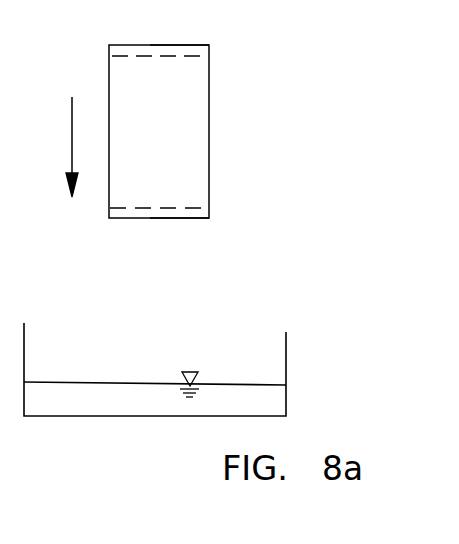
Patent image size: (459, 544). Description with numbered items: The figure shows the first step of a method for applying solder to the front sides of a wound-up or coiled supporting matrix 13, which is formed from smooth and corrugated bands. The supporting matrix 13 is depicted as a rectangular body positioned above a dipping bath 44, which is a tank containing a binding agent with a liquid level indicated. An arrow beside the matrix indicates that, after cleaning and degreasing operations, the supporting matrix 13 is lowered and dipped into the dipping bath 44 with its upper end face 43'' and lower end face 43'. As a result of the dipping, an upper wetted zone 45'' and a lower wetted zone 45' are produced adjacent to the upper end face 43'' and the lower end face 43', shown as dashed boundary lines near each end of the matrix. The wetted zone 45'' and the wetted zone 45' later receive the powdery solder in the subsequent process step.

The supporting matrix 13 is at (203, 87).
The wetted zone 45'' is at (157, 32).
The end face 43'' is at (184, 27).
The wetted zone 45' is at (153, 233).
The end face 43' is at (179, 238).
The dipping bath 44 is at (108, 408).